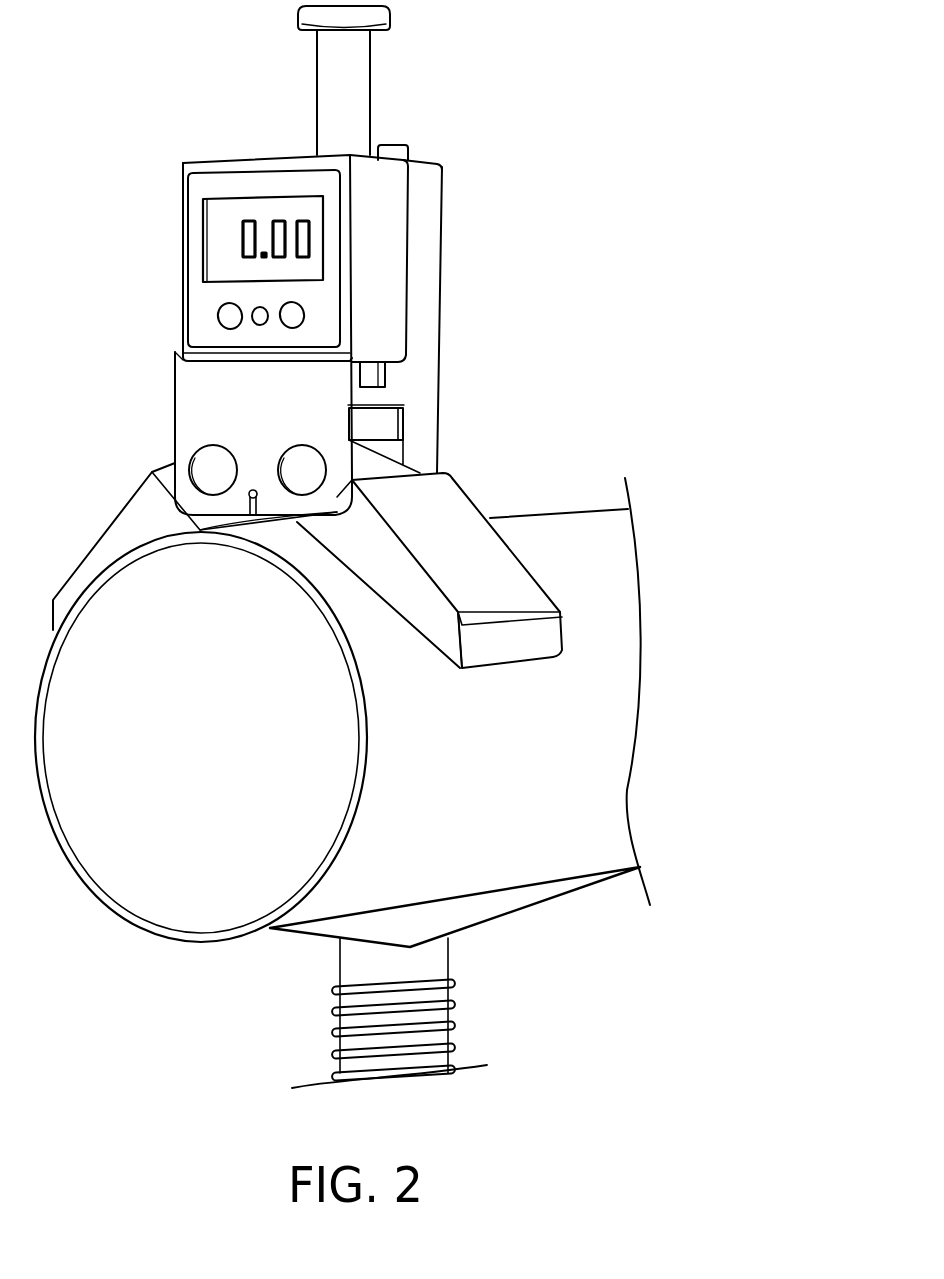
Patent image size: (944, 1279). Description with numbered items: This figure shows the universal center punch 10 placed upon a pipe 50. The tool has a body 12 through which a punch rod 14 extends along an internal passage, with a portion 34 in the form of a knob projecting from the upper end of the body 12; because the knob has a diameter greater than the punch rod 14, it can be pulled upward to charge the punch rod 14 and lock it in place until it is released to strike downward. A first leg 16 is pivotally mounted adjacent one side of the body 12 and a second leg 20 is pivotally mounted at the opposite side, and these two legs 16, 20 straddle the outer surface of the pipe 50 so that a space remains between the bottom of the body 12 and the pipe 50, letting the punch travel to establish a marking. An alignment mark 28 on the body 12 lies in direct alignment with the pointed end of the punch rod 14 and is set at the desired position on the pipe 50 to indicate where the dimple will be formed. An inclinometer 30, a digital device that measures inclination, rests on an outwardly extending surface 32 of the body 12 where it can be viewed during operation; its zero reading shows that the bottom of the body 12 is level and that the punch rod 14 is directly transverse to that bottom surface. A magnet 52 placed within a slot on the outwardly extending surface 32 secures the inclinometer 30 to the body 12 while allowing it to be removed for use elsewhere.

The universal center punch 10 is at (495, 258).
The body 12 is at (193, 407).
The punch rod 14 is at (370, 93).
The first leg 16 is at (107, 520).
The second leg 20 is at (463, 512).
The alignment mark 28 is at (253, 488).
The inclinometer 30 is at (181, 263).
The outwardly extending surface 32 is at (395, 379).
The portion 34 is at (390, 15).
The pipe 50 is at (549, 528).
The magnet 52 is at (386, 367).